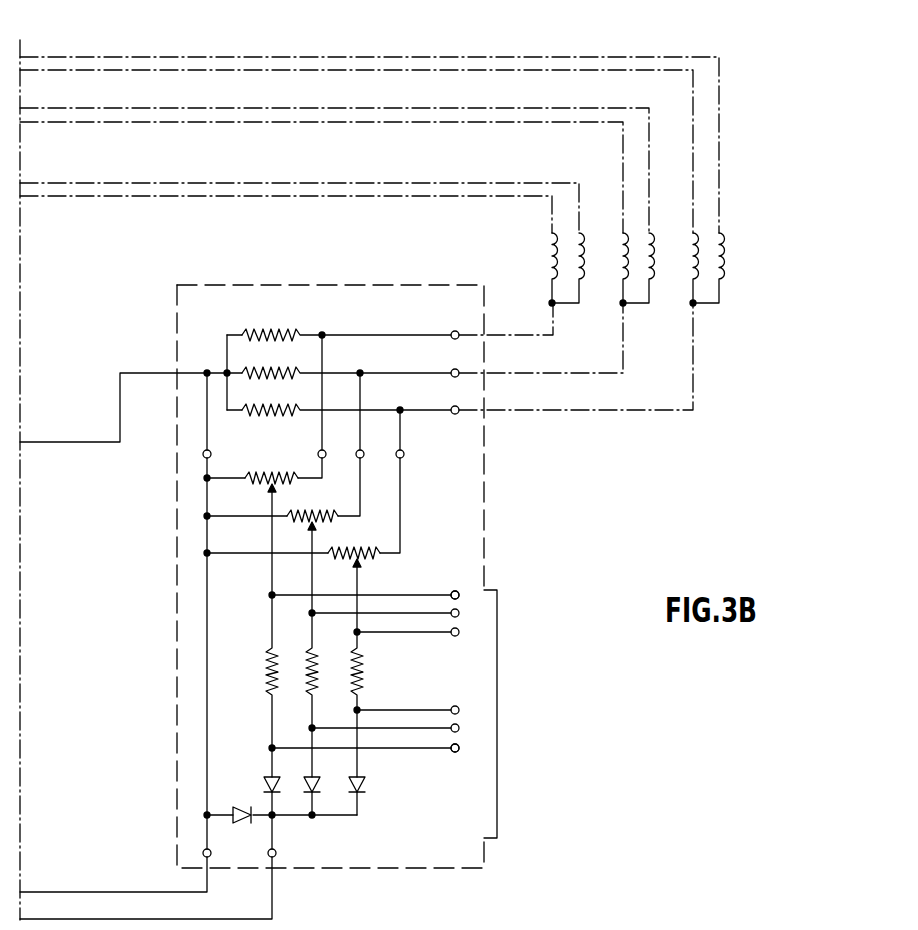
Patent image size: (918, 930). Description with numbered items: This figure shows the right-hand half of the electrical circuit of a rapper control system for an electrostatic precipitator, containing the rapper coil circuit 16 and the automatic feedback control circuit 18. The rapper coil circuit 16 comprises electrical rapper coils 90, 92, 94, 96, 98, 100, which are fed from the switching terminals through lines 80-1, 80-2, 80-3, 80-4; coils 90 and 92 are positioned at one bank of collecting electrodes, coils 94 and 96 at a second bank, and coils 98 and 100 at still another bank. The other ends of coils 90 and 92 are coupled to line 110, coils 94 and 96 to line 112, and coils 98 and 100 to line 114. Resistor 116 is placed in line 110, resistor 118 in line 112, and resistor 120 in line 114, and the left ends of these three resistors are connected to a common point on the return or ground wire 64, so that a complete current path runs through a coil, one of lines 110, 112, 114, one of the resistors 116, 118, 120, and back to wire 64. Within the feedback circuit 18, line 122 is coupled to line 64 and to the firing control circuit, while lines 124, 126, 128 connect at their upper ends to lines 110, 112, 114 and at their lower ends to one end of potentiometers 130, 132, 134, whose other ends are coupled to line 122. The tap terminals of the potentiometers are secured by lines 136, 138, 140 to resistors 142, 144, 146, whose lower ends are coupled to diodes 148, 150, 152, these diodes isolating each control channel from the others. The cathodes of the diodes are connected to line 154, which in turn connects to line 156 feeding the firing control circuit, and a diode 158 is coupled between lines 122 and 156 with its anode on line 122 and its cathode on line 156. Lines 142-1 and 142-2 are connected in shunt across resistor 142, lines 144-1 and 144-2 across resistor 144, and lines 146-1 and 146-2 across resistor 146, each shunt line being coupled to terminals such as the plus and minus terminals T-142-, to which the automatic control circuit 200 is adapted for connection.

The rapper coil circuit 16 is at (634, 44).
The automatic feedback control circuit 18 is at (158, 660).
The return or ground electrical wire 64 is at (109, 442).
The line 80-1 is at (208, 197).
The line 80-2 is at (205, 183).
The line 80-3 is at (305, 123).
The line 80-4 is at (300, 107).
The rapper coil 90 is at (552, 233).
The rapper coil 92 is at (579, 233).
The rapper coil 94 is at (623, 233).
The rapper coil 96 is at (649, 233).
The rapper coil 98 is at (693, 233).
The rapper coil 100 is at (719, 233).
The electrical line 110 is at (418, 333).
The electrical line 112 is at (431, 371).
The electrical line 114 is at (432, 409).
The resistor 116 is at (273, 332).
The resistor 118 is at (284, 370).
The resistor 120 is at (286, 405).
The line 122 is at (208, 622).
The line 124 is at (320, 433).
The line 126 is at (359, 437).
The line 128 is at (399, 437).
The potentiometer 130 is at (262, 472).
The potentiometer 132 is at (303, 510).
The potentiometer 134 is at (356, 547).
The line 136 is at (270, 582).
The line 138 is at (311, 590).
The line 140 is at (355, 592).
The resistor 142 is at (268, 652).
The resistor 144 is at (307, 652).
The resistor 146 is at (350, 652).
The shunt line 142-1 is at (366, 595).
The shunt line 142-2 is at (385, 748).
The shunt line 144-1 is at (378, 615).
The shunt line 144-2 is at (375, 728).
The shunt line 146-1 is at (420, 634).
The shunt line 146-2 is at (415, 710).
The terminal T-142- is at (453, 751).
The diode 148 is at (262, 783).
The diode 150 is at (306, 775).
The diode 152 is at (350, 775).
The line 154 is at (293, 818).
The line 156 is at (276, 904).
The diode 158 is at (230, 830).
The automatic control circuit 200 is at (504, 710).